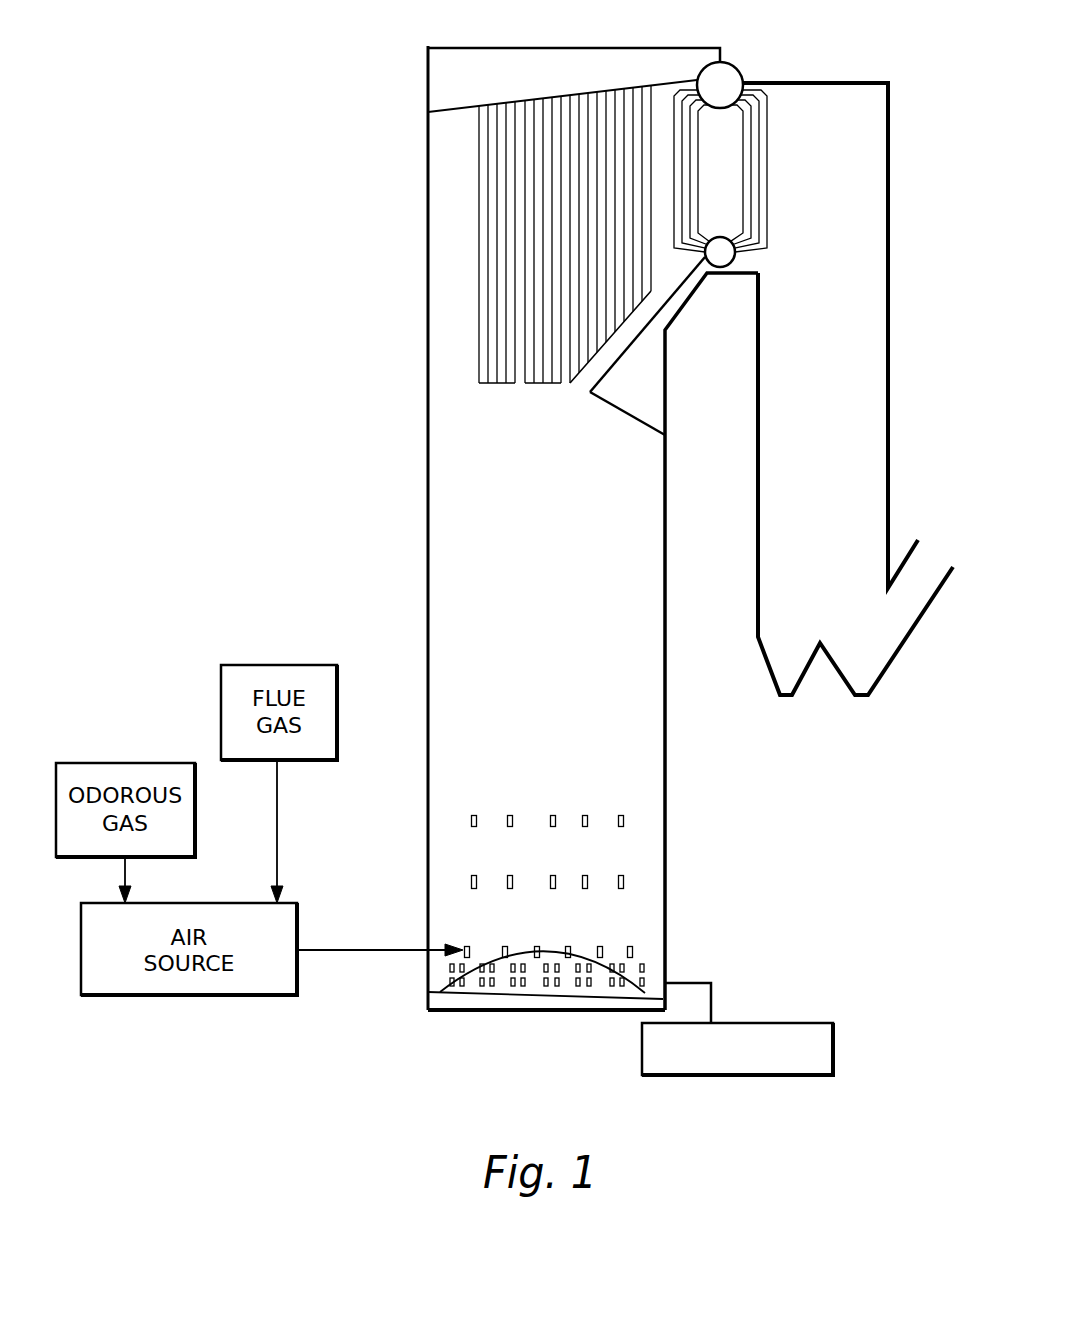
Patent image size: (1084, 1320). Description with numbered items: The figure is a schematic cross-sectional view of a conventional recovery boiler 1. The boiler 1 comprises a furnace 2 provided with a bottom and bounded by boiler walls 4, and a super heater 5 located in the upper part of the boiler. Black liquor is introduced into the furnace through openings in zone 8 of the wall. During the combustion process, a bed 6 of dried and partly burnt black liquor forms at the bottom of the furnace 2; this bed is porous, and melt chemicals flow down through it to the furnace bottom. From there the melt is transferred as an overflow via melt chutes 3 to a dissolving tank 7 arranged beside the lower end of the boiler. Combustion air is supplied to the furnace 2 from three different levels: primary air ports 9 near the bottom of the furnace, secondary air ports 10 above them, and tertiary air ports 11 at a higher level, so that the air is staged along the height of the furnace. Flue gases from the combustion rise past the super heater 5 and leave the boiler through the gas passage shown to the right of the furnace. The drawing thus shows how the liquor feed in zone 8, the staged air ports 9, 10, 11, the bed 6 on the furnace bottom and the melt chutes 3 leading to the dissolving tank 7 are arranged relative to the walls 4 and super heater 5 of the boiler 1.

The boiler 1 is at (553, 554).
The furnace 2 is at (692, 895).
The melt chutes 3 is at (450, 990).
The boiler walls 4 is at (428, 587).
The super heater 5 is at (478, 279).
The bed 6 is at (502, 985).
The dissolving tank 7 is at (747, 1059).
The zone 8 is at (472, 880).
The primary air ports 9 is at (645, 981).
The secondary air ports 10 is at (635, 952).
The tertiary air ports 11 is at (624, 820).